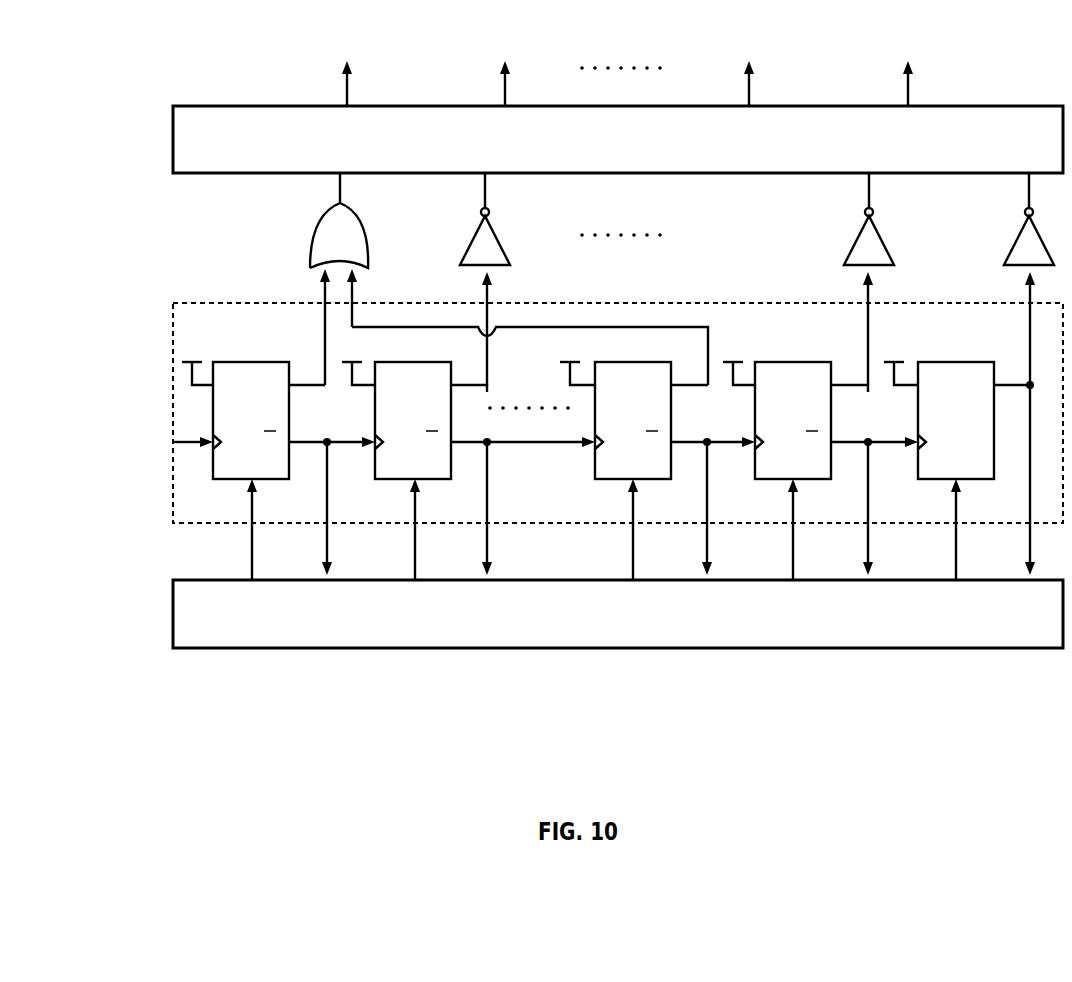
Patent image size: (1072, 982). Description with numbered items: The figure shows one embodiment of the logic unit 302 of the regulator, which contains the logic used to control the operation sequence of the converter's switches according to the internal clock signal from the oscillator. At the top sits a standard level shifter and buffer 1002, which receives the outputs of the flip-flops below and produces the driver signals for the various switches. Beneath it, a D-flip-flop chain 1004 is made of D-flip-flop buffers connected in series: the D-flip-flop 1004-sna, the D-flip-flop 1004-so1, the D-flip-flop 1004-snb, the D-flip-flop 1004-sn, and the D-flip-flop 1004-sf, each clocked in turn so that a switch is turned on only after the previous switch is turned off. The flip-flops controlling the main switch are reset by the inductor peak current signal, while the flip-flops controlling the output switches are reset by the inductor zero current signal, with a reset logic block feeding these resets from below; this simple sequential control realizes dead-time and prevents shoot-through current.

The logic unit 302 is at (556, 356).
The level shifter and buffer 1002 is at (618, 139).
The D-flip-flop chain 1004 is at (272, 287).
The D-flip-flop 1004-sna is at (214, 457).
The D-flip-flop 1004-so1 is at (416, 510).
The D-flip-flop 1004-snb is at (611, 510).
The D-flip-flop 1004-sn is at (784, 510).
The D-flip-flop 1004-sf is at (927, 510).